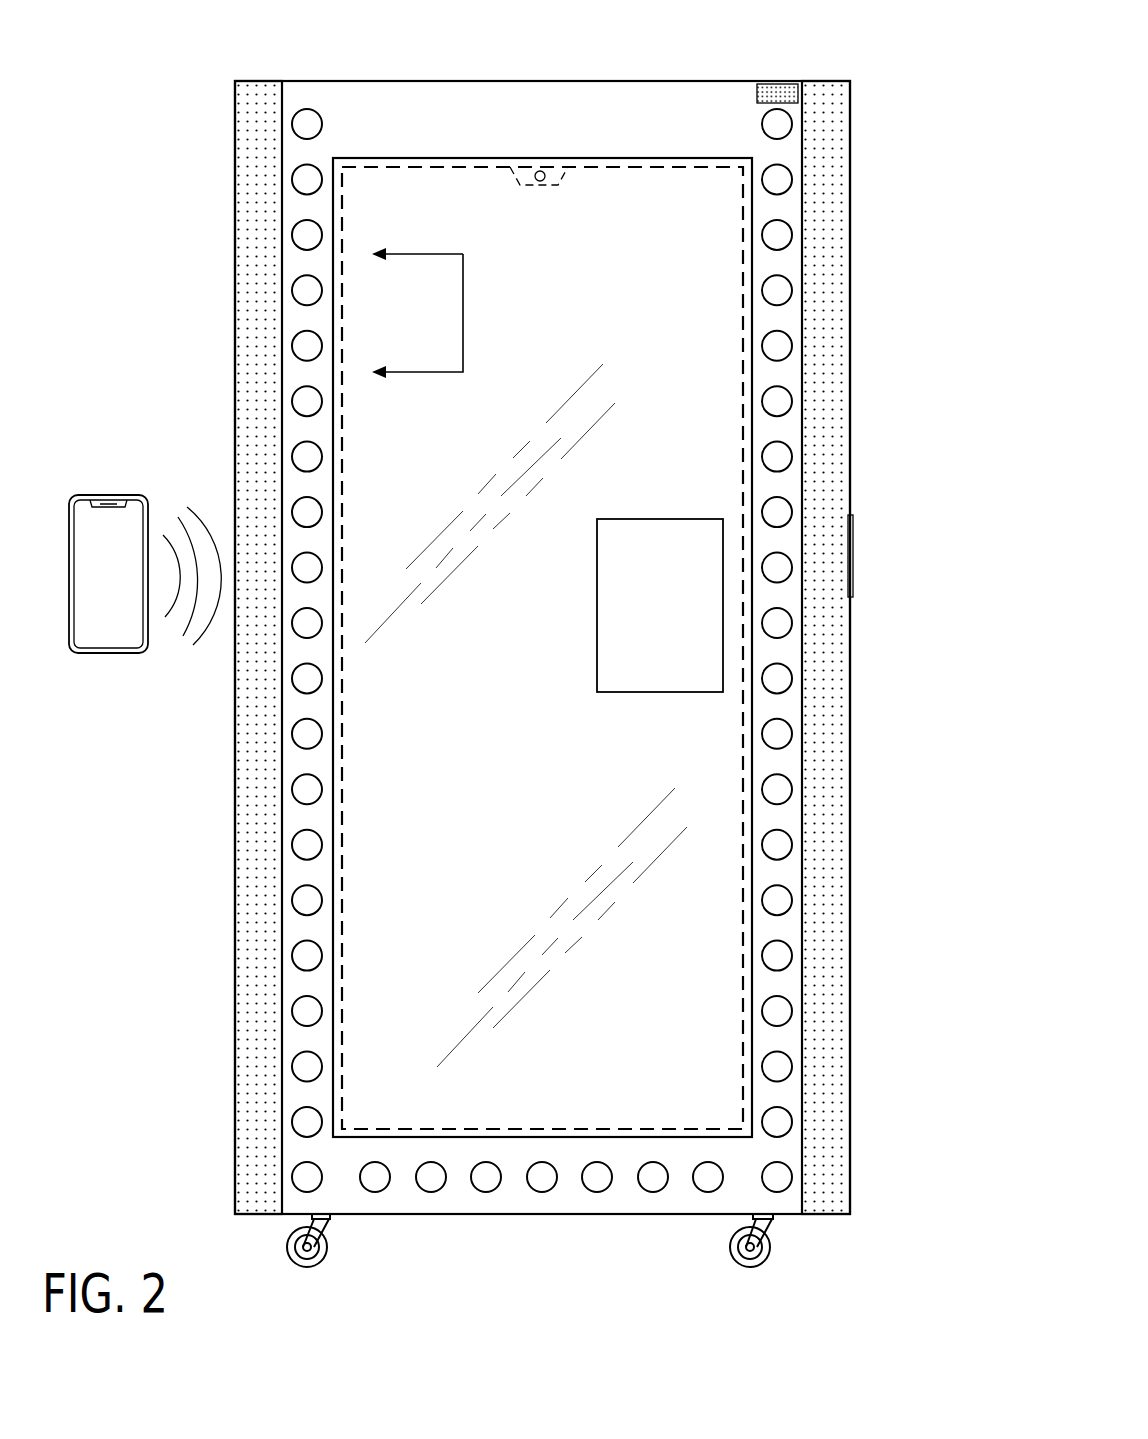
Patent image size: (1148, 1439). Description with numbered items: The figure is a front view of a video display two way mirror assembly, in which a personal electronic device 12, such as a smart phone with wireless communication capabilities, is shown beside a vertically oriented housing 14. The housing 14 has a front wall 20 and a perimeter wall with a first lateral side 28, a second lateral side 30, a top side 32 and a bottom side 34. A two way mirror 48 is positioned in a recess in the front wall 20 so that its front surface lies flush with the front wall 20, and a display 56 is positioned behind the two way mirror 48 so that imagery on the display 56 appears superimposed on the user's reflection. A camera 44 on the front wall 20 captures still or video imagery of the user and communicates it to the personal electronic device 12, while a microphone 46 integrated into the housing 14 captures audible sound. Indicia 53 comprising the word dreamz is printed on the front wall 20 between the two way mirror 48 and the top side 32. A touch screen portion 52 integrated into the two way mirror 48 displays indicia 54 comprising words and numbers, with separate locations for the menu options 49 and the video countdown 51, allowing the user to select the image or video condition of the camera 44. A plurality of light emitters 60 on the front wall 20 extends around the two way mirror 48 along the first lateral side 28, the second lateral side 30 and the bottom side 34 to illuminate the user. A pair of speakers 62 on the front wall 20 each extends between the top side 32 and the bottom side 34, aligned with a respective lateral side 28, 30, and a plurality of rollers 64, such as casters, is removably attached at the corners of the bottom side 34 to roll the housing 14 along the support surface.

The personal electronic device 12 is at (90, 497).
The housing 14 is at (852, 81).
The front wall 20 is at (737, 102).
The first lateral side 28 is at (236, 320).
The second lateral side 30 is at (852, 240).
The top side 32 is at (584, 81).
The bottom side 34 is at (540, 1215).
The camera 44 is at (540, 170).
The microphone 46 is at (778, 88).
The two way mirror 48 is at (378, 893).
The menu options 49 is at (734, 547).
The video countdown 51 is at (696, 158).
The touch screen portion 52 is at (702, 511).
The indicia 53 is at (366, 99).
The indicia 54 is at (708, 602).
The display 56 is at (336, 245).
The plurality of light emitters 60 is at (305, 845).
The pair of speakers 62 is at (262, 380).
The plurality of rollers 64 is at (307, 1268).